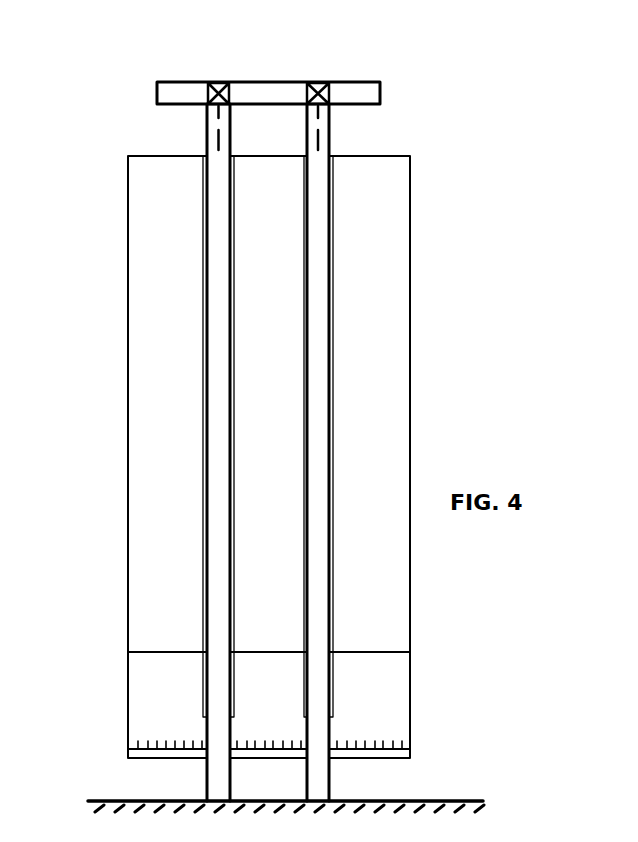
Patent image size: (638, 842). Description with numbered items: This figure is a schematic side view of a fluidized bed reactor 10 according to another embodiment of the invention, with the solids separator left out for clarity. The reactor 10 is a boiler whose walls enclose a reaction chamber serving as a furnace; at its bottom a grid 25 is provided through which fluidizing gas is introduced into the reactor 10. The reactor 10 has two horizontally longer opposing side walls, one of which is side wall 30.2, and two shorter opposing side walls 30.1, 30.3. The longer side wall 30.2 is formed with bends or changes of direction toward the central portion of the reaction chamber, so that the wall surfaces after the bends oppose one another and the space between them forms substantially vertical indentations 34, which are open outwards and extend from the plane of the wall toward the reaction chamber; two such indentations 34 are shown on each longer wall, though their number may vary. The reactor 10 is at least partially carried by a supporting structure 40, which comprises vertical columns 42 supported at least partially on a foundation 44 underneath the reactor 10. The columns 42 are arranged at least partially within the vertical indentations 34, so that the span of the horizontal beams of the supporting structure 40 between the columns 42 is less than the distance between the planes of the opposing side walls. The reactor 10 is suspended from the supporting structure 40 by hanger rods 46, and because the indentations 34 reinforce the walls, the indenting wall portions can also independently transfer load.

The fluidized bed reactor 10 is at (118, 117).
The supporting structure 40 is at (283, 93).
The hanger rods 46 is at (323, 120).
The indentations 34 is at (206, 280).
The vertical columns 42 is at (215, 423).
The side wall 30.1 is at (409, 353).
The side wall 30.2 is at (351, 624).
The side wall 30.3 is at (128, 438).
The grid 25 is at (367, 745).
The foundation 44 is at (270, 826).